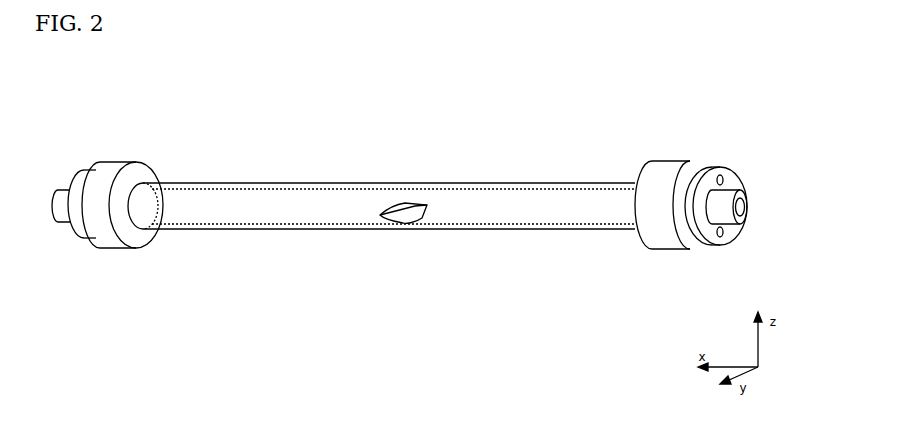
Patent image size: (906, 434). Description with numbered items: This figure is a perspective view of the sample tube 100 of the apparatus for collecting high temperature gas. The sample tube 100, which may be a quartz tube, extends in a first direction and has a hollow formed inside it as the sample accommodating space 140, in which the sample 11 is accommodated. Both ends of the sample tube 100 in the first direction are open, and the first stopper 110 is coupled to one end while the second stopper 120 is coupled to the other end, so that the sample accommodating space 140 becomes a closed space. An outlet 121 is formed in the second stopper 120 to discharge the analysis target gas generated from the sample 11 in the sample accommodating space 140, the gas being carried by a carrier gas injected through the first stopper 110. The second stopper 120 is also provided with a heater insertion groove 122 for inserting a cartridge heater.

The sample tube 100 is at (578, 183).
The first stopper 110 is at (97, 167).
The second stopper 120 is at (730, 167).
The outlet 121 is at (750, 216).
The heater insertion groove 122 is at (723, 238).
The sample accommodating space 140 is at (528, 208).
The sample 11 is at (412, 206).